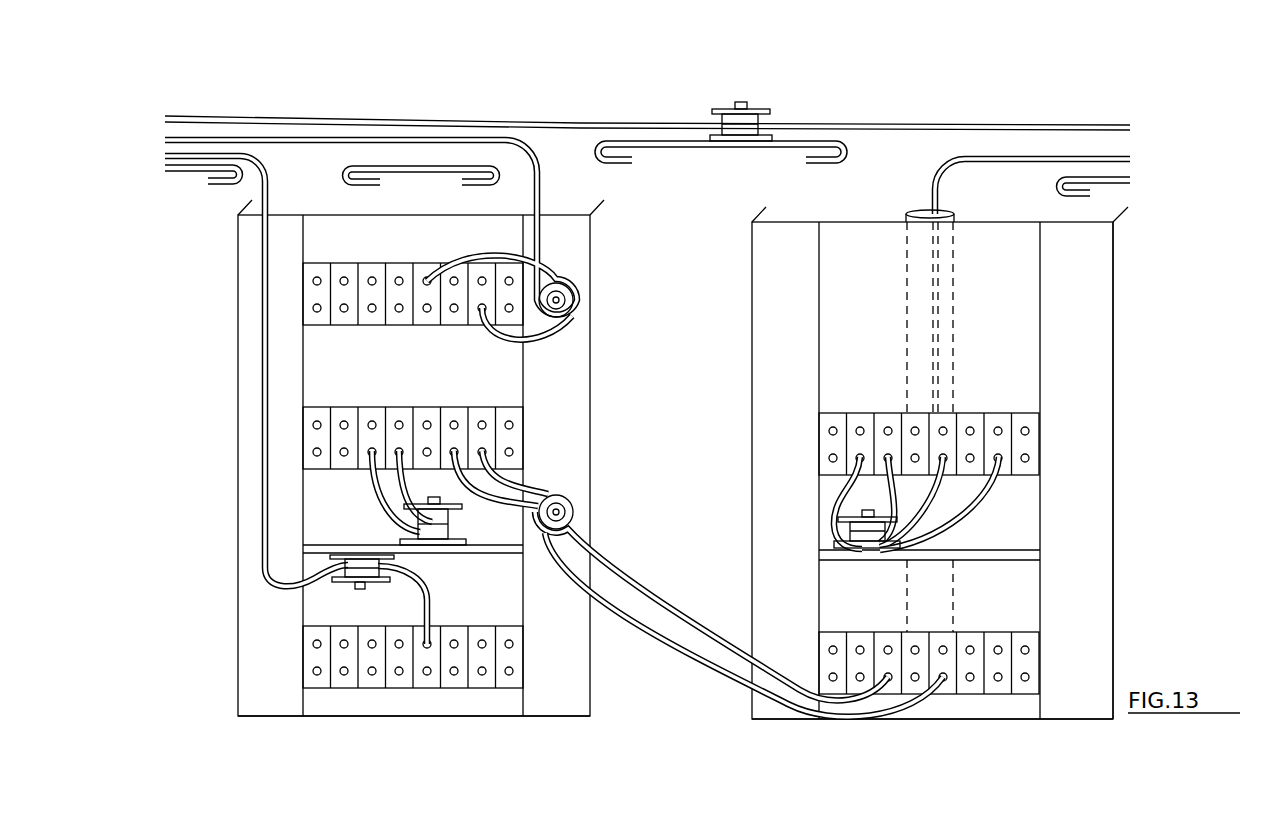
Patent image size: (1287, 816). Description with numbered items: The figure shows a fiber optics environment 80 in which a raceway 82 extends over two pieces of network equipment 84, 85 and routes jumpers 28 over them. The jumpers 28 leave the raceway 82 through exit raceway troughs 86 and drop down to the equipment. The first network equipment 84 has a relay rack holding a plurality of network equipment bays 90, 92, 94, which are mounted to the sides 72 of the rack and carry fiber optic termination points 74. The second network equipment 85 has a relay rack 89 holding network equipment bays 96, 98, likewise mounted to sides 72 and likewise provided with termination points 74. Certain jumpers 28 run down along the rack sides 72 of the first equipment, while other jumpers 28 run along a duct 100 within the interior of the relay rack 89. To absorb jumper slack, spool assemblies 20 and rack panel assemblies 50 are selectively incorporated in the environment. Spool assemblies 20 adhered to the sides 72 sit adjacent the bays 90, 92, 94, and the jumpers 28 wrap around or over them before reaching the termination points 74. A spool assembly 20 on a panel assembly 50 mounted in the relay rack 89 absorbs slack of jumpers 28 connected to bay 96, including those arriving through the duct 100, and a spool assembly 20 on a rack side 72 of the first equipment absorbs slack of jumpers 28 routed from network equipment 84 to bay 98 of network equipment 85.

The spool assembly 20 is at (778, 97).
The jumper 28 is at (845, 120).
The rack panel assembly 50 is at (347, 537).
The relay rack side 72 is at (263, 705).
The fiber optic termination point 74 is at (345, 312).
The fiber optics environment 80 is at (1080, 88).
The raceway 82 is at (668, 160).
The network equipment 84 is at (642, 396).
The network equipment 85 is at (1150, 218).
The exit raceway trough 86 is at (488, 187).
The relay rack 89 is at (1118, 322).
The network equipment bay 90 is at (342, 258).
The network equipment bay 92 is at (380, 402).
The network equipment bay 94 is at (374, 700).
The network equipment bay 96 is at (972, 404).
The network equipment bay 98 is at (975, 624).
The duct 100 is at (946, 211).